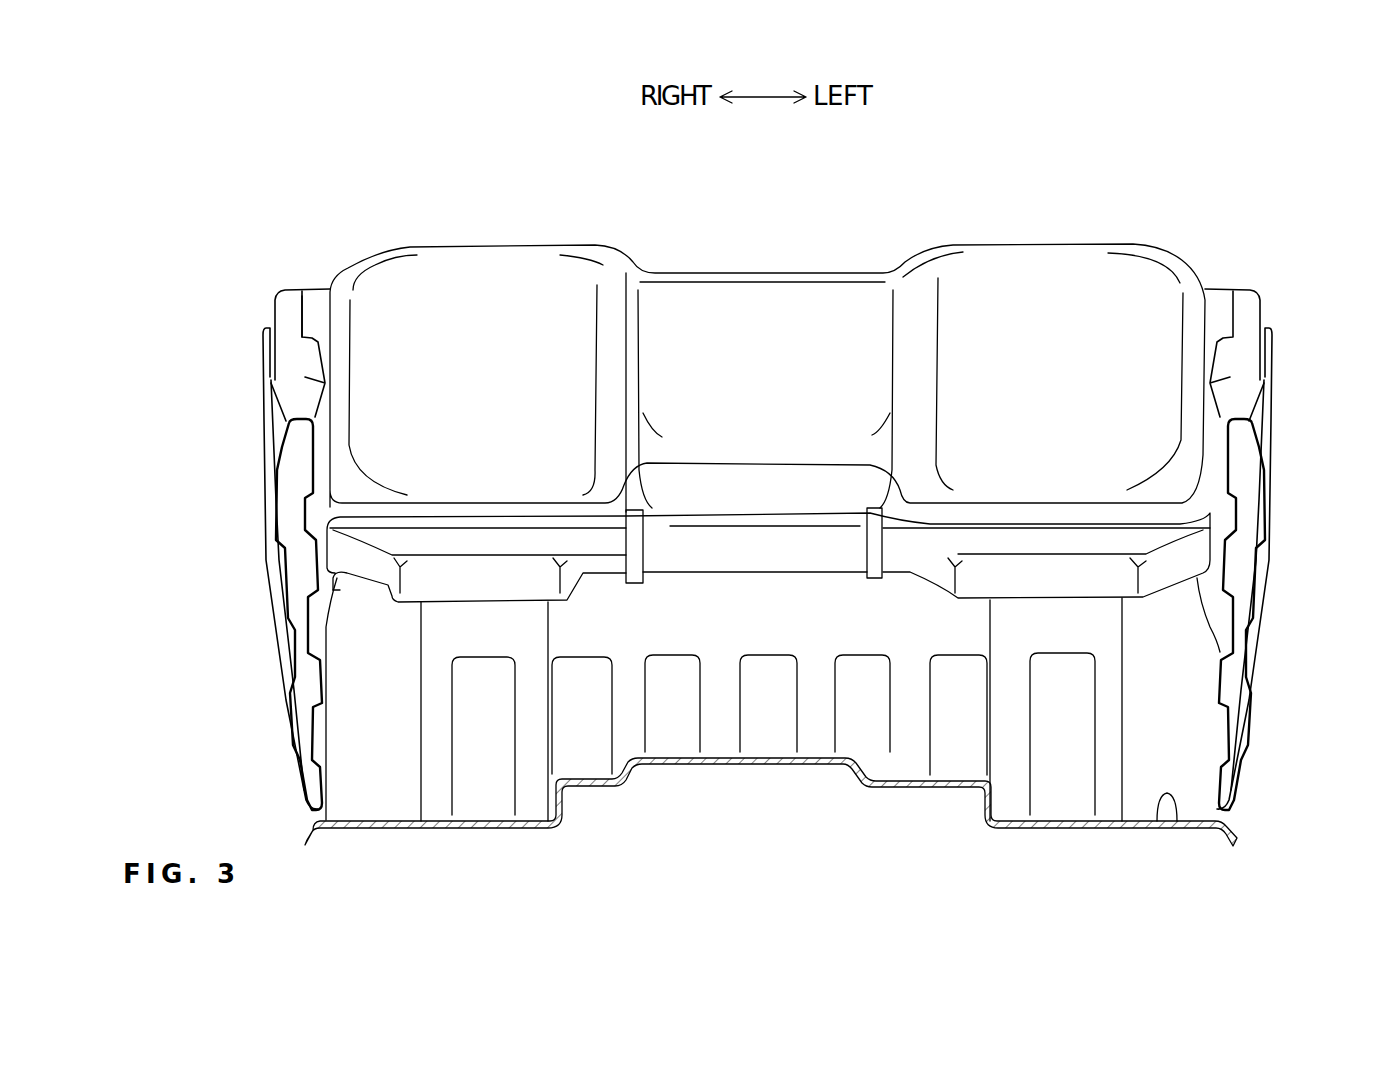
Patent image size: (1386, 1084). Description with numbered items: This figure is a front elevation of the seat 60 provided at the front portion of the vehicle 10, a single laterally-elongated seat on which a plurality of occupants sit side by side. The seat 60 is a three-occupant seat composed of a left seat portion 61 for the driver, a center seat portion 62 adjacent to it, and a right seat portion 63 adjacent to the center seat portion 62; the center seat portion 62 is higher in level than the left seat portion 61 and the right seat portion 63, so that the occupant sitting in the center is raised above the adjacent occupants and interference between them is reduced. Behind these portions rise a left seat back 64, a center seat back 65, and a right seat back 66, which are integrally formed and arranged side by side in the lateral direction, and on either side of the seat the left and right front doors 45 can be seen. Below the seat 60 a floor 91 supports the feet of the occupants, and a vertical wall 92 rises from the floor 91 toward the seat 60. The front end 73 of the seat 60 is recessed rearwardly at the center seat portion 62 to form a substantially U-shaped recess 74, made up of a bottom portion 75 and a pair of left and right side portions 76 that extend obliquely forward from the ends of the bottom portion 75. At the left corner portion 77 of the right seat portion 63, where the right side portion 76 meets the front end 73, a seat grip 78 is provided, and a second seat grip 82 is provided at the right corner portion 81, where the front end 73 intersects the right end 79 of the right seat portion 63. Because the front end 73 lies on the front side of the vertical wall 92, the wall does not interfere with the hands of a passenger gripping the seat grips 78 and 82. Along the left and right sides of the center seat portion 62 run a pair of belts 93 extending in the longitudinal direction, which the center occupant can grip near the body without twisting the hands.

The vehicle 10 is at (1215, 171).
The front door 45 is at (287, 541).
The seat 60 is at (810, 258).
The left seat portion 61 is at (1047, 530).
The center seat portion 62 is at (761, 507).
The right seat portion 63 is at (477, 530).
The left seat back 64 is at (1040, 290).
The center seat back 65 is at (747, 327).
The right seat back 66 is at (480, 277).
The front end 73 is at (444, 600).
The recess 74 is at (705, 573).
The bottom portion 75 is at (743, 558).
The side portion 76 is at (614, 580).
The left corner portion 77 is at (567, 628).
The seat grip 78 is at (585, 602).
The right end 79 is at (318, 553).
The right corner portion 81 is at (390, 620).
The seat grip 82 is at (363, 578).
The floor 91 is at (1177, 821).
The vertical wall 92 is at (952, 740).
The belt 93 is at (630, 510).